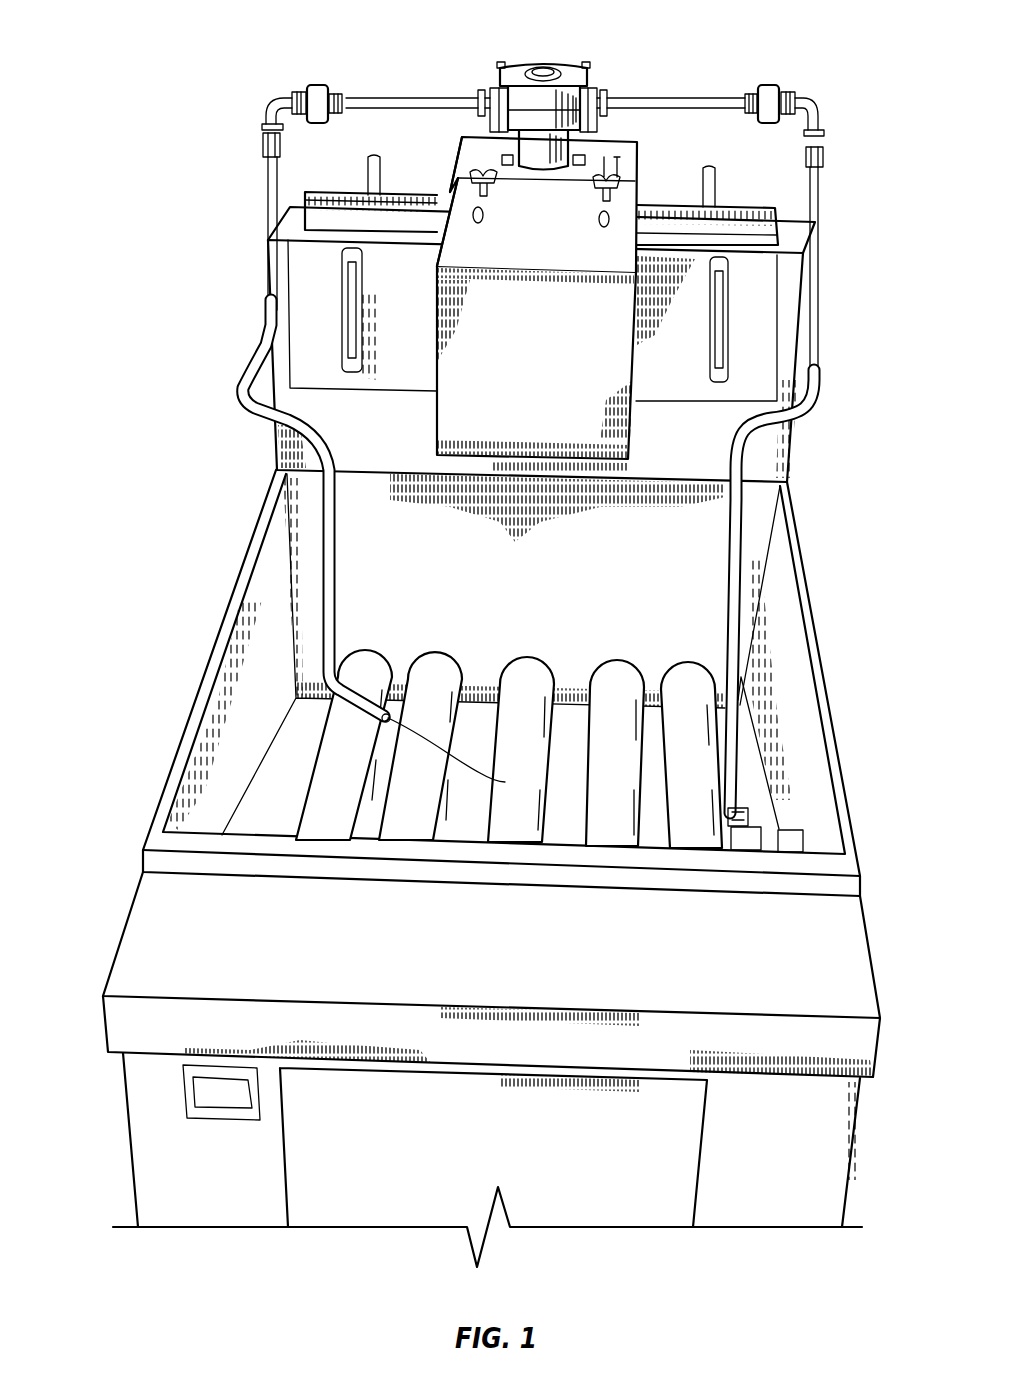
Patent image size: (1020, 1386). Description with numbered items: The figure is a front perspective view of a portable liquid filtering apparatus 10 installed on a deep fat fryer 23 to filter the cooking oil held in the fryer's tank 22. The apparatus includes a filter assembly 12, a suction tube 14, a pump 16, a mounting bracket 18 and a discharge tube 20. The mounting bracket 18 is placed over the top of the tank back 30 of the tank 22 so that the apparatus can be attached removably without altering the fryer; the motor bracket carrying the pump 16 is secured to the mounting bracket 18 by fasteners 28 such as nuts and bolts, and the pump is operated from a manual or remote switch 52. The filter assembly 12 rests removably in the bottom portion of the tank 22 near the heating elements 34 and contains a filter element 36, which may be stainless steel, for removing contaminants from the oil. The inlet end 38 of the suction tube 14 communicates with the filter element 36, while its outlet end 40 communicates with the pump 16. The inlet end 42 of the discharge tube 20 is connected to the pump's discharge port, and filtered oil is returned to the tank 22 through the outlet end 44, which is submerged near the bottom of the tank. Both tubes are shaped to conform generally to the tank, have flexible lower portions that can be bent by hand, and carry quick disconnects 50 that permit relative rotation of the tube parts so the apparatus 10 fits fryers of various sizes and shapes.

The portable liquid filtering apparatus 10 is at (133, 36).
The filter assembly 12 is at (778, 700).
The suction tube 14 is at (822, 385).
The pump 16 is at (545, 63).
The mounting bracket 18 is at (617, 356).
The discharge tube 20 is at (237, 385).
The tank 22 is at (812, 640).
The deep fat fryer 23 is at (105, 926).
The fasteners 28 is at (482, 172).
The tank back 30 is at (268, 268).
The heating elements 34 is at (438, 654).
The filter element 36 is at (773, 800).
The inlet end of suction tube 38 is at (740, 808).
The outlet end of suction tube 40 is at (605, 92).
The inlet end of discharge tube 42 is at (482, 92).
The outlet end of discharge tube 44 is at (464, 759).
The quick disconnects 50 is at (320, 84).
The switch 52 is at (612, 172).